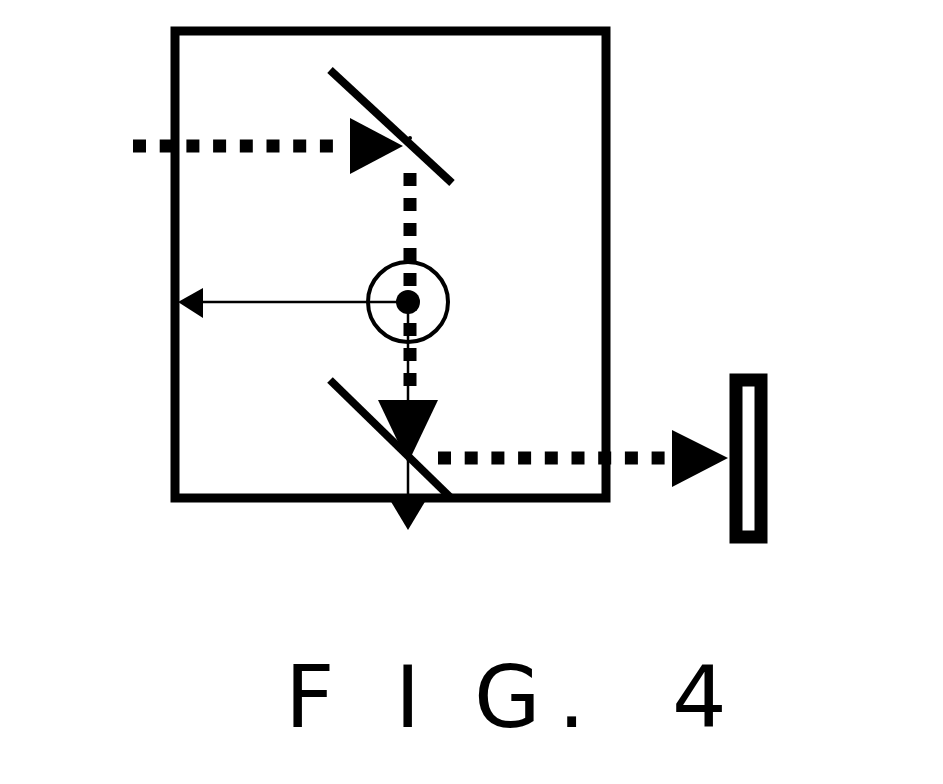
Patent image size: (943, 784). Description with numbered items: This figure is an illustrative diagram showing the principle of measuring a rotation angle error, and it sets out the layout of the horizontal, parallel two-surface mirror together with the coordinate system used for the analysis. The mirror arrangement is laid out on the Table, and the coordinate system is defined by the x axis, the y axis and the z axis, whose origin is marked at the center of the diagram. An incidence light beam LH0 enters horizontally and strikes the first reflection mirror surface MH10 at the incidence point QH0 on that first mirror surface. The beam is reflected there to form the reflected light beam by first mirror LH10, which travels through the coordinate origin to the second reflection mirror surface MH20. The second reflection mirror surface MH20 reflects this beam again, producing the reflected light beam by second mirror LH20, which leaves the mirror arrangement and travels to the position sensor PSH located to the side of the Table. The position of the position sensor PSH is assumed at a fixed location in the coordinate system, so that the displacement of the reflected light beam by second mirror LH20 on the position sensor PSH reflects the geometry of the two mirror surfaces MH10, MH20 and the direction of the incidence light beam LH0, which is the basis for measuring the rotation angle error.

The table Table is at (314, 264).
The incidence light beam LH0 is at (227, 149).
The first reflection mirror surface MH10 is at (331, 113).
The incidence point on first mirror surface QH0 is at (534, 148).
The reflected light beam by first mirror LH10 is at (370, 318).
The y axis y is at (408, 302).
The z axis z is at (269, 302).
The x axis x is at (408, 435).
The second reflection mirror surface MH20 is at (364, 438).
The reflected light beam by second mirror LH20 is at (583, 421).
The position sensor PSH is at (799, 458).